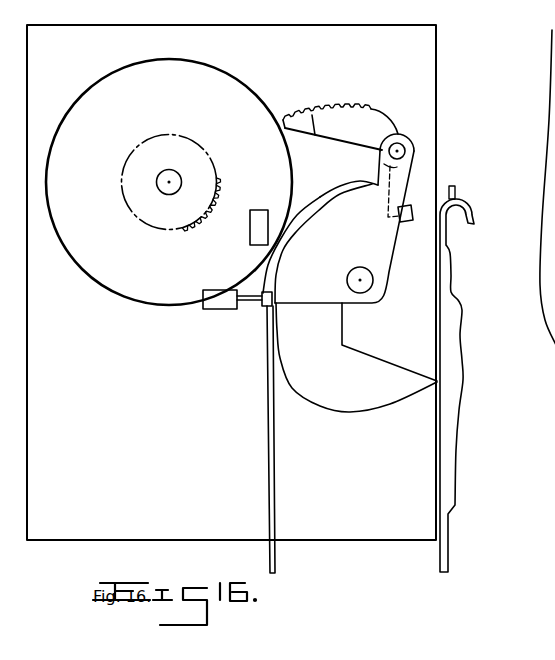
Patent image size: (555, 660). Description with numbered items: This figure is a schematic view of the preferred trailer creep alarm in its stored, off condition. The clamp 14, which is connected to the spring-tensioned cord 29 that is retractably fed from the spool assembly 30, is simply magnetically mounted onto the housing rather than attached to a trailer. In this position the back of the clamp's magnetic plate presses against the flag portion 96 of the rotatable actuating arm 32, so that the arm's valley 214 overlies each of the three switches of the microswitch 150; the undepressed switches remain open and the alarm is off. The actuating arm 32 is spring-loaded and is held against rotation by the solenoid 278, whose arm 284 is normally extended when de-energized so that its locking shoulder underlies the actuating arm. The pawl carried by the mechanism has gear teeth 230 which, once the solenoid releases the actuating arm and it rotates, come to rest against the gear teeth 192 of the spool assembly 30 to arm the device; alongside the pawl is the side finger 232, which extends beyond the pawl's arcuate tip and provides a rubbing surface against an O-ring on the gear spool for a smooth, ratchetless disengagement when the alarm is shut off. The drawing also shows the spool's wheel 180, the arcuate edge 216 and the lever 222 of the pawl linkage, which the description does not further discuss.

The clamp 14 is at (464, 449).
The spring-tensioned cord 29 is at (268, 492).
The spool assembly 30 is at (204, 53).
The actuating arm 32 is at (350, 250).
The flag portion 96 is at (385, 401).
The microswitch 150 is at (258, 210).
The supply reel 180 is at (103, 85).
The gear teeth 192 is at (184, 232).
The valley 214 is at (278, 258).
The arcuate edge 216 is at (330, 187).
The lever arm 222 is at (372, 118).
The gear teeth 230 is at (330, 106).
The side finger 232 is at (289, 114).
The solenoid 278 is at (216, 311).
The arm 284 is at (254, 308).